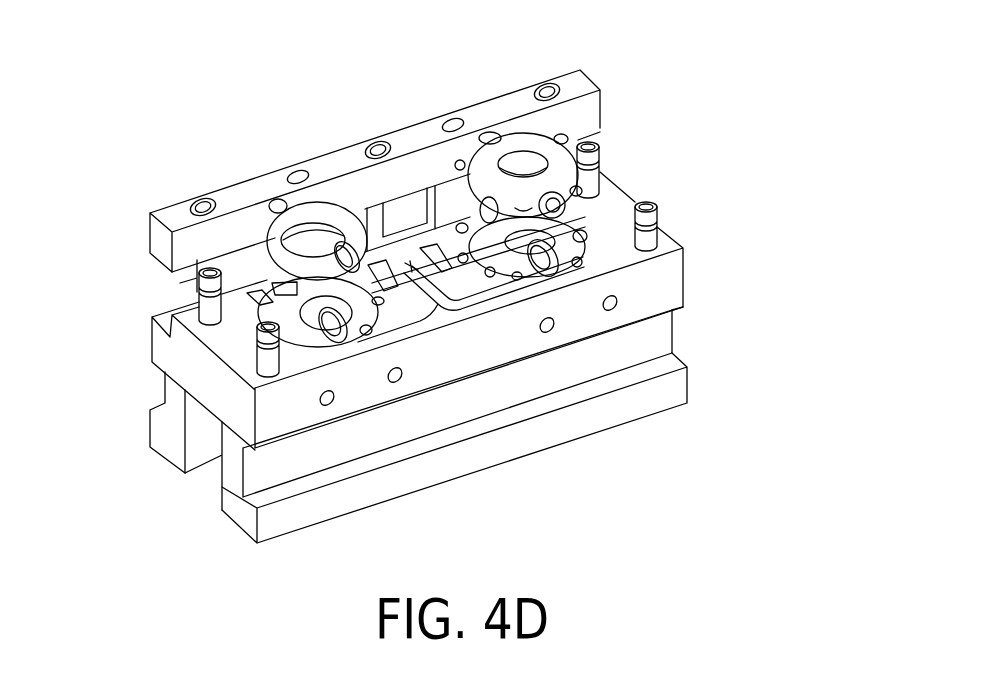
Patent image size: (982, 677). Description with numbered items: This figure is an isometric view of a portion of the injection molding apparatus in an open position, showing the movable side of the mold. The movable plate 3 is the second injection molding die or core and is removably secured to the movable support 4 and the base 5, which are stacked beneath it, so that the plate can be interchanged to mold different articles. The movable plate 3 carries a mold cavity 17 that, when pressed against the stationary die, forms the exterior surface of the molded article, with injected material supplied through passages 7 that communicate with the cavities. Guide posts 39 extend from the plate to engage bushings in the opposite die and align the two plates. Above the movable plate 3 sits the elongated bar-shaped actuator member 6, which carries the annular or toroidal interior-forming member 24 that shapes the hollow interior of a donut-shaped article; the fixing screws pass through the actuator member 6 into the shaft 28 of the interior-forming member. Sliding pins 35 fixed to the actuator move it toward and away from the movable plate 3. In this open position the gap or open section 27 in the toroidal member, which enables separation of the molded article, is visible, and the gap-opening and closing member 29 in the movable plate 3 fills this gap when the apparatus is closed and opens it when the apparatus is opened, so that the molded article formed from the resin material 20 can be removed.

The movable plate 3 is at (662, 287).
The movable support 4 is at (653, 342).
The base 5 is at (665, 390).
The actuator member 6 is at (515, 103).
The passages 7 is at (616, 301).
The mold cavity 17 is at (562, 237).
The resin material 20 is at (540, 143).
The interior-forming member 24 is at (262, 202).
The open section 27 is at (340, 215).
The shaft 28 is at (274, 234).
The gap-filling member 29 is at (357, 345).
The sliding pin 35 is at (420, 200).
The guide post 39 is at (660, 203).